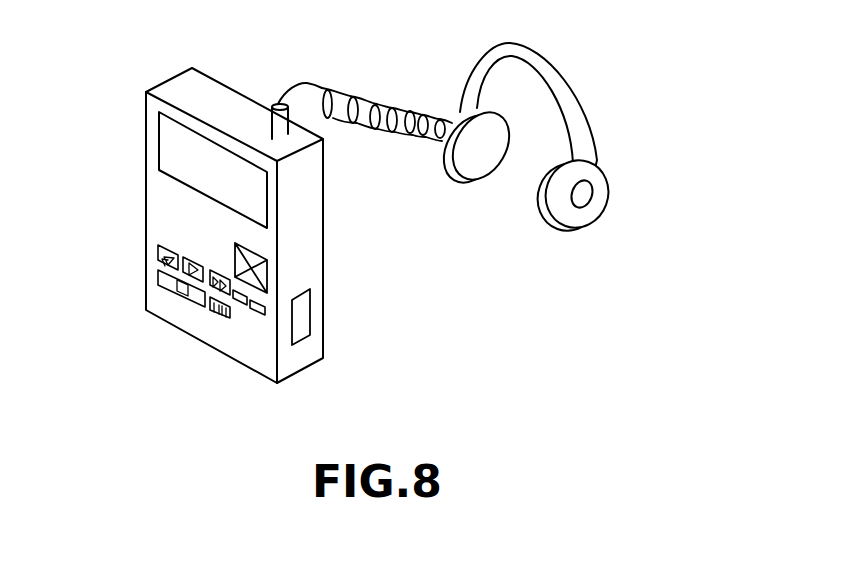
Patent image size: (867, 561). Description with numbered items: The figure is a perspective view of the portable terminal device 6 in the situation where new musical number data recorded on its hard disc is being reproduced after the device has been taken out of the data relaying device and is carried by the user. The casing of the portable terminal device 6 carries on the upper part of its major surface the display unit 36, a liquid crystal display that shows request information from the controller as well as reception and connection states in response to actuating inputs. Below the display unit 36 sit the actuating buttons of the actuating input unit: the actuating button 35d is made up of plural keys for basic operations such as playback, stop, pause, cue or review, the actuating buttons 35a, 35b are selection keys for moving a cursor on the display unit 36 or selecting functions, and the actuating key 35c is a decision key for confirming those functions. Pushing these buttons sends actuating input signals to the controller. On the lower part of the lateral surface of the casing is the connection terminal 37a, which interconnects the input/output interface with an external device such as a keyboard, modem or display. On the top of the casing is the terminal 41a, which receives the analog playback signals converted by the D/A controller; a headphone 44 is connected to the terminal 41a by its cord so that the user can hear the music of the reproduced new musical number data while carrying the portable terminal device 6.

The portable terminal device 6 is at (153, 72).
The display unit 36 is at (170, 147).
The terminal 41a is at (272, 138).
The actuating button 35d is at (155, 259).
The actuating key 35c is at (260, 273).
The actuating button 35a is at (242, 304).
The actuating button 35b is at (260, 314).
The connection terminal 37a is at (300, 333).
The headphone 44 is at (610, 187).